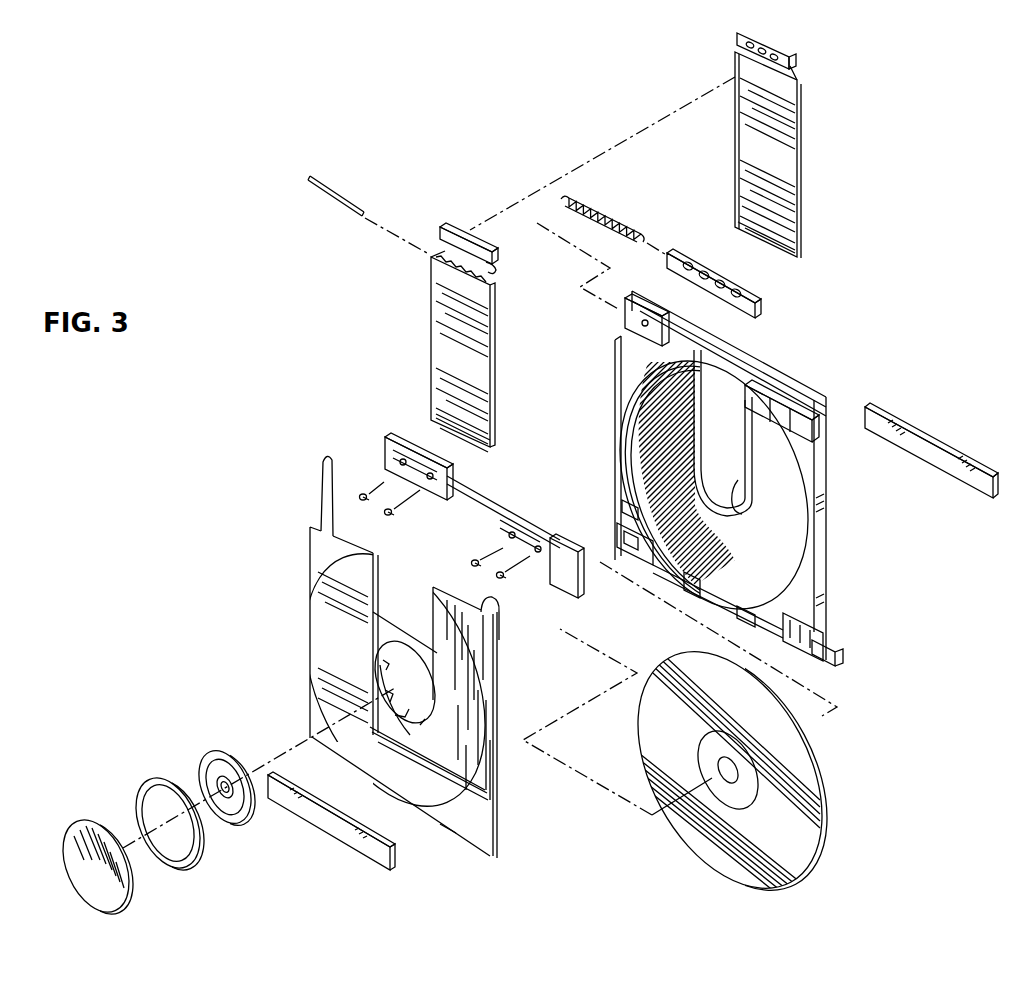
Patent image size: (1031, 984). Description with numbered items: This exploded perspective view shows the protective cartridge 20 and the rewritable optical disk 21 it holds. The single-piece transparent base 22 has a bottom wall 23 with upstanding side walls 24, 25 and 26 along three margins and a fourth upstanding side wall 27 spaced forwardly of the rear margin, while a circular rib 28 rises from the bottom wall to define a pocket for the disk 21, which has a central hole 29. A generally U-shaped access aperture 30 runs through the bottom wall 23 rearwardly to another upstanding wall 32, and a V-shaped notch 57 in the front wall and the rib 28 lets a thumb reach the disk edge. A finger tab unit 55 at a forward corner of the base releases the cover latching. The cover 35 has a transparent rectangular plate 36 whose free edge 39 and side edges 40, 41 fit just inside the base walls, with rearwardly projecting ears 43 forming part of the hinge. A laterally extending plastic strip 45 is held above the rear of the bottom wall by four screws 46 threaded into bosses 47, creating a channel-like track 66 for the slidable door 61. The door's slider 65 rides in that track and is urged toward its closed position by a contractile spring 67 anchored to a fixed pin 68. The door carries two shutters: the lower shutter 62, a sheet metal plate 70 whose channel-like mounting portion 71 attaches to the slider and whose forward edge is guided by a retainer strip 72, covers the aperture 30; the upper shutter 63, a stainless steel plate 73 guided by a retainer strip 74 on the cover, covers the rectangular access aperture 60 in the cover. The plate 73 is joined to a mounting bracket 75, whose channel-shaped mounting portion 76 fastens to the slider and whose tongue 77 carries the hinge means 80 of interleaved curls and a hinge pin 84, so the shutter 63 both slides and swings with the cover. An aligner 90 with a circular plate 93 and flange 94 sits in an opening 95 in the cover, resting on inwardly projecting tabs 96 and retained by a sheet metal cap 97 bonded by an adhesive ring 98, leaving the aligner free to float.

The protective cartridge 20 is at (673, 464).
The rewritable optical disk 21 is at (739, 774).
The base 22 is at (673, 464).
The bottom wall 23 is at (640, 378).
The side wall 24 is at (818, 545).
The side wall 25 is at (740, 617).
The side wall 26 is at (622, 488).
The fourth upstanding side wall 27 is at (772, 410).
The circular rib 28 is at (705, 545).
The hole 29 is at (704, 737).
The access aperture 30 is at (735, 516).
The upstanding wall 32 is at (712, 388).
The cover 35 is at (394, 674).
The plate 36 is at (422, 763).
The free edge 39 is at (440, 824).
The side edge 40 is at (488, 790).
The side edge 41 is at (396, 634).
The ears 43 is at (329, 495).
The plastic strip 45 is at (472, 515).
The screws 46 is at (396, 516).
The bosses 47 is at (790, 390).
The finger tab unit 55 is at (836, 657).
The V-shaped notch 57 is at (703, 598).
The access aperture 60 is at (372, 592).
The slidable door 61 is at (821, 139).
The shutter 62 is at (784, 176).
The shutter 63 is at (439, 303).
The slider 65 is at (752, 303).
The track 66 is at (716, 405).
The contractile spring 67 is at (602, 205).
The fixed pin 68 is at (627, 318).
The plate 70 is at (797, 236).
The mounting portion 71 is at (768, 47).
The retainer strip 72 is at (962, 470).
The plate 73 is at (452, 322).
The retainer strip 74 is at (332, 828).
The mounting bracket 75 is at (430, 240).
The mounting portion 76 is at (483, 232).
The tongue 77 is at (490, 270).
The hinge means 80 is at (410, 263).
The hinge pin 84 is at (340, 186).
The aligner 90 is at (152, 817).
The circular plate 93 is at (228, 806).
The flange 94 is at (233, 802).
The opening 95 is at (438, 692).
The tabs 96 is at (420, 722).
The sheet metal cap 97 is at (80, 870).
The ring 98 is at (171, 862).